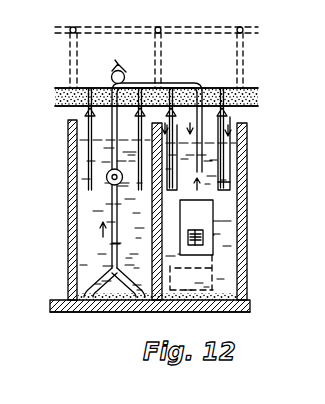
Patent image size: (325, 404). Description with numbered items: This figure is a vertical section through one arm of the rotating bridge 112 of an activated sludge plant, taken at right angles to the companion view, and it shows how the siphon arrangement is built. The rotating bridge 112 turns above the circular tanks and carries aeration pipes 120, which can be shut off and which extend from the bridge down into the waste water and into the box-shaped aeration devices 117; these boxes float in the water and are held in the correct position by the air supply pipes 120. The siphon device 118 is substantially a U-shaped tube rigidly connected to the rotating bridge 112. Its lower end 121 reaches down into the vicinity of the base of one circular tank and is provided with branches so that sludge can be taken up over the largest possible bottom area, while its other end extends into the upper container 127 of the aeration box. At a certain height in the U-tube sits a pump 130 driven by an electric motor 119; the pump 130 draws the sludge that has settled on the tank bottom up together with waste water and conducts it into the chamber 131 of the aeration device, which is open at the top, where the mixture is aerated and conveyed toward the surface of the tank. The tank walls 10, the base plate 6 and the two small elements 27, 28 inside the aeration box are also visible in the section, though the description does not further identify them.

The base plate 6 is at (152, 312).
The tank wall 10 is at (68, 237).
The electrode 27 is at (186, 213).
The electrode 28 is at (204, 238).
The rotating bridge 112 is at (243, 100).
The aeration device 117 is at (182, 250).
The siphon device 118 is at (182, 86).
The electric motor 119 is at (131, 67).
The aeration pipe 120 is at (83, 115).
The siphon end 121 is at (95, 312).
The upper container 127 is at (232, 188).
The pump 130 is at (107, 185).
The chamber 131 is at (231, 163).